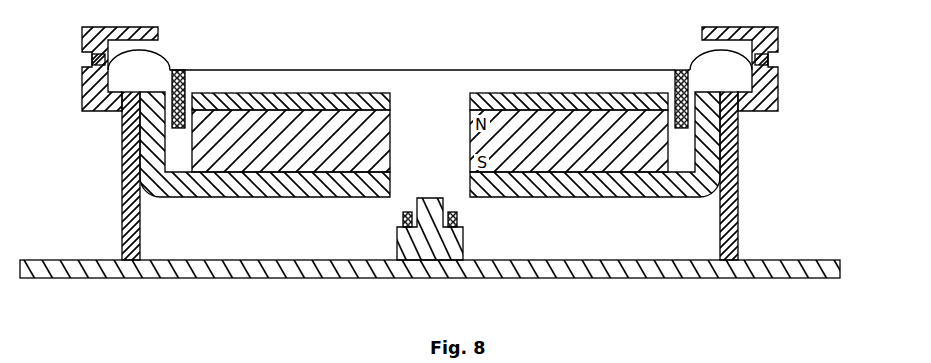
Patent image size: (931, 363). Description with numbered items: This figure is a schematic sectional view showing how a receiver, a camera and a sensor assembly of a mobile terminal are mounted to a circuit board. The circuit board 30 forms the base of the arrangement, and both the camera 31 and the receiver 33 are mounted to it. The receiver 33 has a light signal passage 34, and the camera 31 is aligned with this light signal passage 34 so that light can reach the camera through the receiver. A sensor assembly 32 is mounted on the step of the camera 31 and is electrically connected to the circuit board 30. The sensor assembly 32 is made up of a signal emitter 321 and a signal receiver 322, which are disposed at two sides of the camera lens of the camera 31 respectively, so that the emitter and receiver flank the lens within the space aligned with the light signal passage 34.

The circuit board 30 is at (222, 264).
The camera 31 is at (450, 252).
The sensor assembly 32 is at (612, 190).
The signal emitter 321 is at (458, 218).
The signal receiver 322 is at (402, 217).
The receiver 33 is at (243, 53).
The light signal passage 34 is at (414, 151).